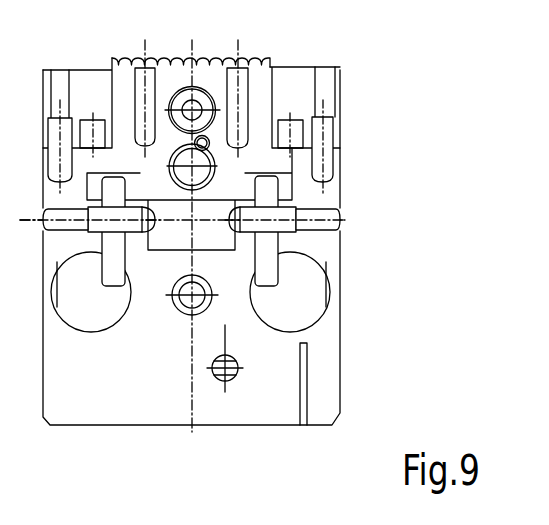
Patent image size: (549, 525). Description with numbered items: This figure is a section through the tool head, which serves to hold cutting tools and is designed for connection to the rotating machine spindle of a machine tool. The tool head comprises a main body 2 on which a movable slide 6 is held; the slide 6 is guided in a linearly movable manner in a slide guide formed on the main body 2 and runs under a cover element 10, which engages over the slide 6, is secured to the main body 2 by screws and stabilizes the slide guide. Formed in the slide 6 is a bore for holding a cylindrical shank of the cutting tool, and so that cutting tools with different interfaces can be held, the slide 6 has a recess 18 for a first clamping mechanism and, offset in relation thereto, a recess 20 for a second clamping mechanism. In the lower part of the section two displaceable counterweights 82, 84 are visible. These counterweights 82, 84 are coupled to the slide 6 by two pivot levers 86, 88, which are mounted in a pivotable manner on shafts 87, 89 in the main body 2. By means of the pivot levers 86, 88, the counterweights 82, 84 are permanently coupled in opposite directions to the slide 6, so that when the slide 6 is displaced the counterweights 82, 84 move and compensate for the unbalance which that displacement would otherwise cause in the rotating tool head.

The main body 2 is at (333, 398).
The slide 6 is at (263, 95).
The cover element 10 is at (88, 77).
The recess 18 is at (201, 110).
The recess 20 is at (170, 158).
The counterweight 82 is at (70, 291).
The counterweight 84 is at (310, 292).
The pivot lever 86 is at (108, 240).
The shaft 87 is at (46, 214).
The pivot lever 88 is at (280, 240).
The shaft 89 is at (334, 215).